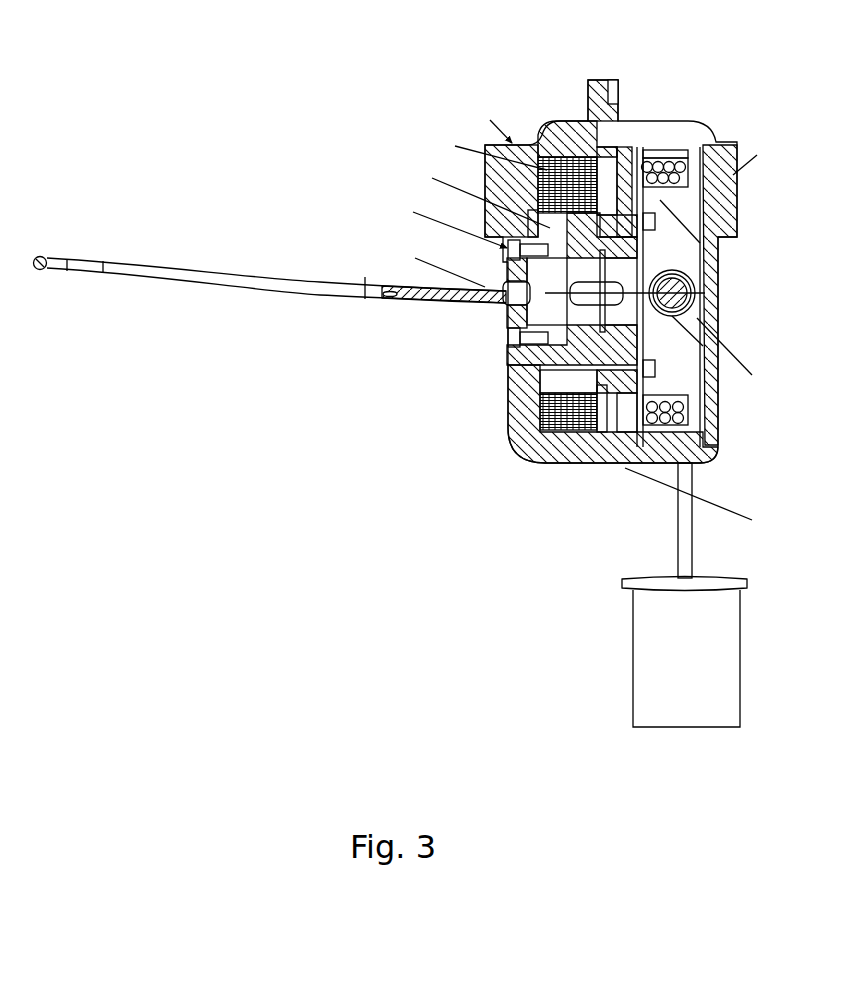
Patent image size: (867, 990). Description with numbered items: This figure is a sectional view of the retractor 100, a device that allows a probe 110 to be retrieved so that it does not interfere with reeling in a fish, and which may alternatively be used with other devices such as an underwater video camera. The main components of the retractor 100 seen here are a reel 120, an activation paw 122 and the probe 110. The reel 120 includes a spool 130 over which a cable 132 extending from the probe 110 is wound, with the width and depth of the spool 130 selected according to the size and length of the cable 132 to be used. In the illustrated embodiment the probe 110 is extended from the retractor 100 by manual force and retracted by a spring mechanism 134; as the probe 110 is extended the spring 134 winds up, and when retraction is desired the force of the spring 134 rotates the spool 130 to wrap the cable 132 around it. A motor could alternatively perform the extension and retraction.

The retractor 100 is at (500, 510).
The probe 110 is at (670, 715).
The reel 120 is at (722, 310).
The activation paw 122 is at (218, 282).
The spool 130 is at (690, 157).
The cable 132 is at (682, 160).
The spring mechanism 134 is at (540, 393).